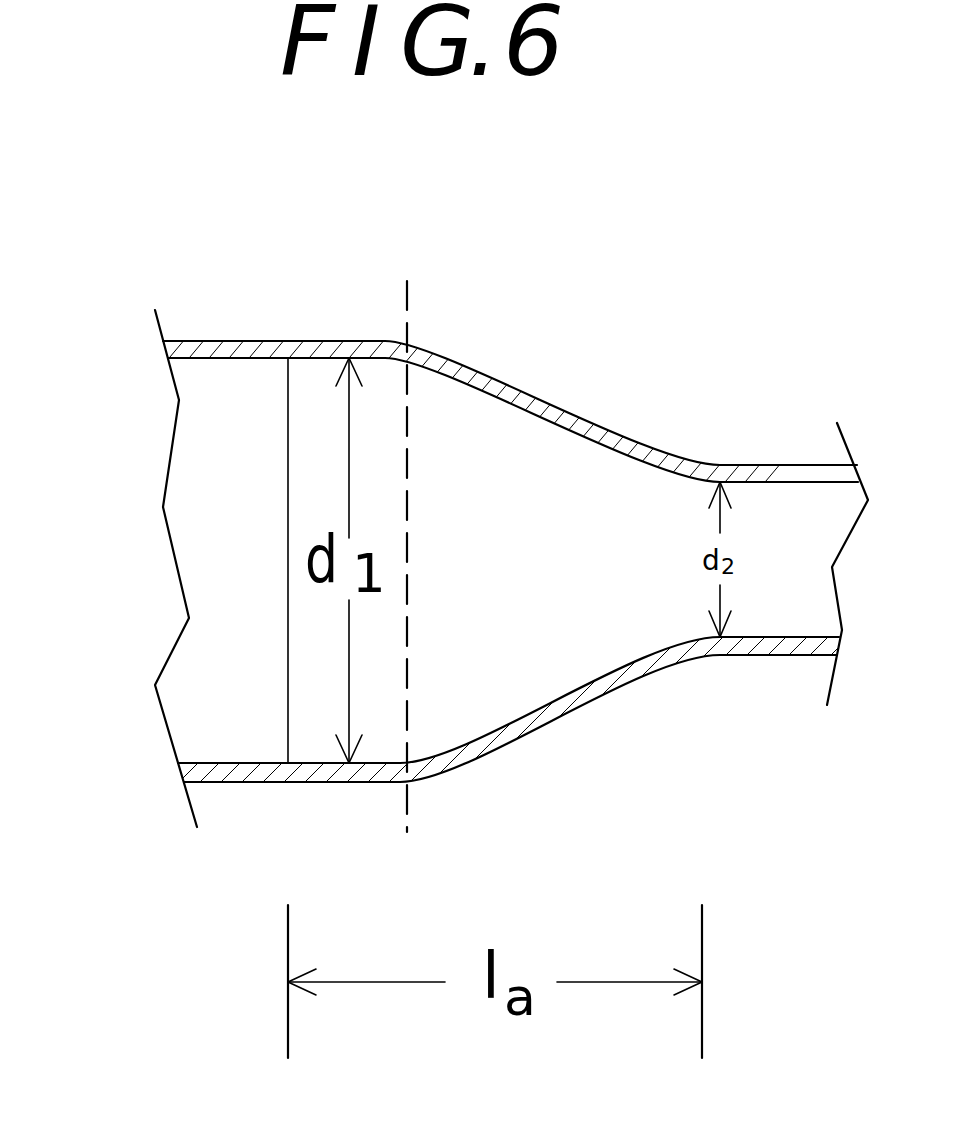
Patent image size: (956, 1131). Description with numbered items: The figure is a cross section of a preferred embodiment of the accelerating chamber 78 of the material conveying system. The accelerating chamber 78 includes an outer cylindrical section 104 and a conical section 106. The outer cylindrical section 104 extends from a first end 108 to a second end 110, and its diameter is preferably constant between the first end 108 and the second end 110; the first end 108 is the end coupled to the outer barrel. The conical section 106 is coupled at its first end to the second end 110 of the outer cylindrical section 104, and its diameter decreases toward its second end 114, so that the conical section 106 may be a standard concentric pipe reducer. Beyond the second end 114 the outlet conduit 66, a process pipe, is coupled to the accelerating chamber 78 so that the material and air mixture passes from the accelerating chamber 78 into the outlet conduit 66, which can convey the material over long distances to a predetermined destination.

The first end 108 is at (237, 342).
The accelerating chamber 78 is at (568, 342).
The second end 114 is at (642, 497).
The outlet conduit 66 is at (765, 510).
The conical section 106 is at (545, 653).
The second end 110 is at (413, 777).
The outer cylindrical section 104 is at (312, 732).